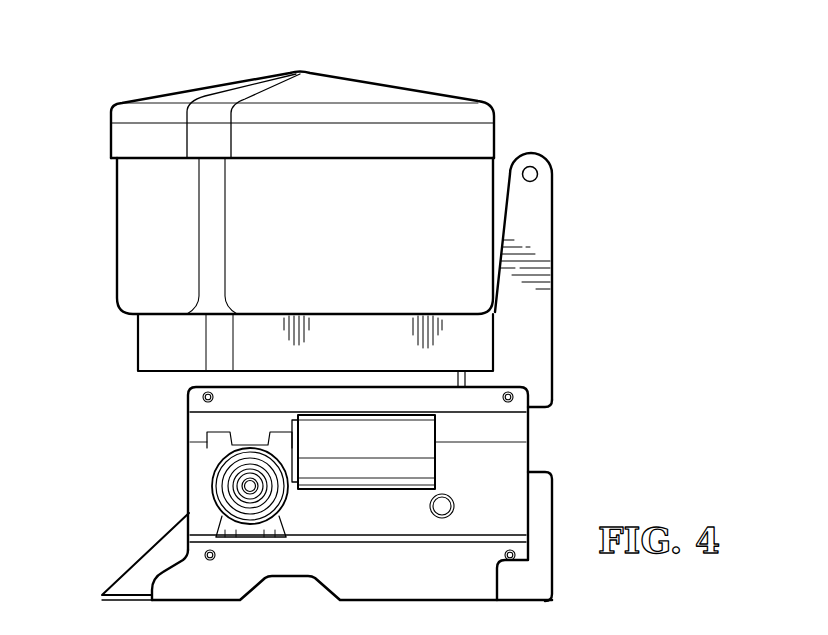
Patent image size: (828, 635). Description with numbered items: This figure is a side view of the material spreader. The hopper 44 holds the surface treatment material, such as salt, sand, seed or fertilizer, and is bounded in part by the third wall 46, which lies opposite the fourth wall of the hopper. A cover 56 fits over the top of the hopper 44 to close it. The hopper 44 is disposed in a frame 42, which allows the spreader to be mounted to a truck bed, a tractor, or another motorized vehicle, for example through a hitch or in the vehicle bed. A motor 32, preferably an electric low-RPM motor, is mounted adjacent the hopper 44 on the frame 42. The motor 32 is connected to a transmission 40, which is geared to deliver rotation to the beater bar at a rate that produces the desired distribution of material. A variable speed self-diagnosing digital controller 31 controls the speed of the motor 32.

The variable speed self-diagnosing digital controller 31 is at (158, 457).
The motor 32 is at (213, 495).
The transmission 40 is at (398, 472).
The frame 42 is at (487, 338).
The hopper 44 is at (210, 240).
The third wall 46 is at (481, 210).
The cover 56 is at (355, 95).